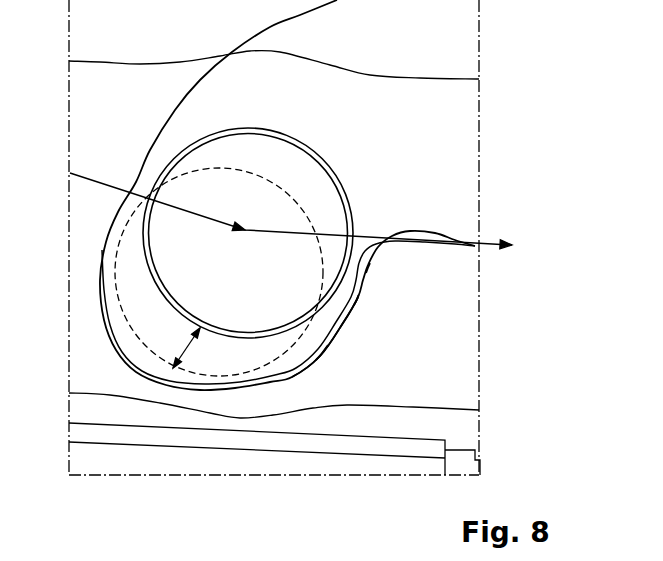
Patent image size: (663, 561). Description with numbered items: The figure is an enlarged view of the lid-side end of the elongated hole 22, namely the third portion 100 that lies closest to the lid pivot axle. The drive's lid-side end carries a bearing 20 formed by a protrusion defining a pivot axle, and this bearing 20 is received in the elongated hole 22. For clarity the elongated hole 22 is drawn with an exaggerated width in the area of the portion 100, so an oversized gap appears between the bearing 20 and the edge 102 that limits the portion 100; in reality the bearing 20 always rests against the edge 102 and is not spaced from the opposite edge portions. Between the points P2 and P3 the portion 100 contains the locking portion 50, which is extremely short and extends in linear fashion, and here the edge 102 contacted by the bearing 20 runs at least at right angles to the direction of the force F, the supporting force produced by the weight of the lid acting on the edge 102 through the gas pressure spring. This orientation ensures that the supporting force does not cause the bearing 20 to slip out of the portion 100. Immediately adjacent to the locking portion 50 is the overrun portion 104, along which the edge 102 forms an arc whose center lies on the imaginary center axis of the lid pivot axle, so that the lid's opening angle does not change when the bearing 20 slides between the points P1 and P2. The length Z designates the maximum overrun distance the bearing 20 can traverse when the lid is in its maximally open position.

The bearing 20 is at (285, 162).
The elongated hole 22 is at (458, 130).
The locking portion 50 is at (364, 287).
The third portion 100 is at (110, 256).
The edge 102 is at (360, 260).
The overrun portion 104 is at (346, 324).
The point P1 is at (322, 350).
The point P2 is at (359, 297).
The point P3 is at (367, 270).
The force F is at (85, 178).
The maximum overrun length Z is at (184, 347).